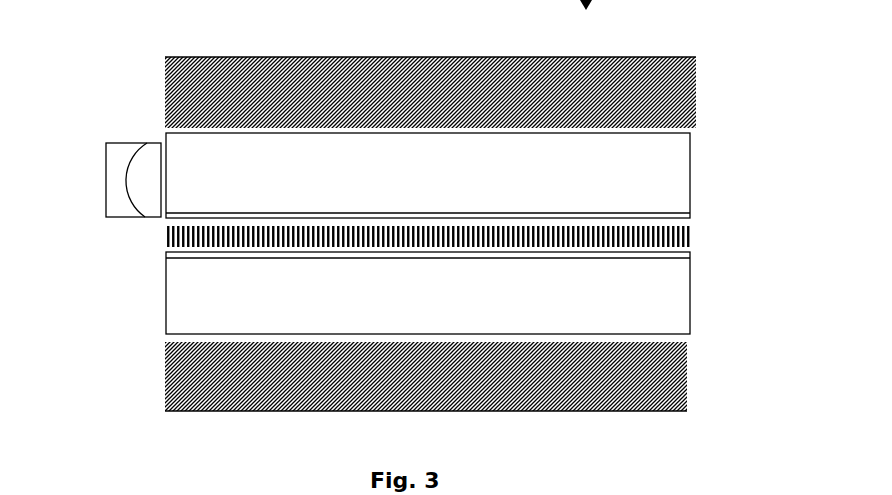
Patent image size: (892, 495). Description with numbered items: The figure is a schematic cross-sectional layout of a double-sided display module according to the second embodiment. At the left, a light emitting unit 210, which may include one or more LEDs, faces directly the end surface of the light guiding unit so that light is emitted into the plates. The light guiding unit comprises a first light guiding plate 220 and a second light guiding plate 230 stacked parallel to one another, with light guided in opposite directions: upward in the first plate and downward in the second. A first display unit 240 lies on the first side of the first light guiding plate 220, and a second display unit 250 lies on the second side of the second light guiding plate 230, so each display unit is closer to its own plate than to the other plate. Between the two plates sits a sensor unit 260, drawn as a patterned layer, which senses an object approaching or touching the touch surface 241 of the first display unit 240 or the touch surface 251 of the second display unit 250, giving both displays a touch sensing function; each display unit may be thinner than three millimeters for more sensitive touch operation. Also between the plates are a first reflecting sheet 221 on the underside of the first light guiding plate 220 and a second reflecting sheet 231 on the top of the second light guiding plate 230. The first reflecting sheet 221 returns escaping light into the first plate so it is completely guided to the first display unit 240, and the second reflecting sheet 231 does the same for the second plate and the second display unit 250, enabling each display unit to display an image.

The light emitting unit 210 is at (130, 200).
The first light guiding plate 220 is at (690, 180).
The first reflecting sheet 221 is at (690, 213).
The second light guiding plate 230 is at (690, 293).
The second reflecting sheet 231 is at (692, 252).
The first display unit 240 is at (696, 87).
The touch surface 241 is at (363, 55).
The second display unit 250 is at (687, 380).
The touch surface 251 is at (425, 410).
The sensor unit 260 is at (165, 235).